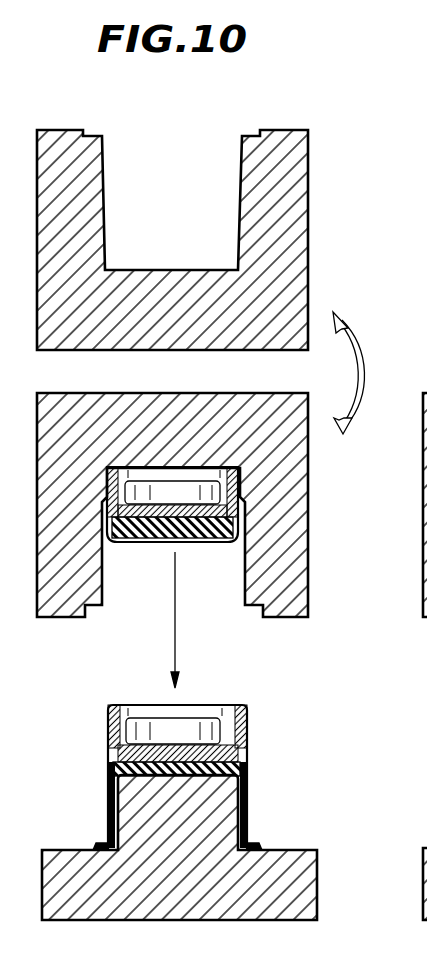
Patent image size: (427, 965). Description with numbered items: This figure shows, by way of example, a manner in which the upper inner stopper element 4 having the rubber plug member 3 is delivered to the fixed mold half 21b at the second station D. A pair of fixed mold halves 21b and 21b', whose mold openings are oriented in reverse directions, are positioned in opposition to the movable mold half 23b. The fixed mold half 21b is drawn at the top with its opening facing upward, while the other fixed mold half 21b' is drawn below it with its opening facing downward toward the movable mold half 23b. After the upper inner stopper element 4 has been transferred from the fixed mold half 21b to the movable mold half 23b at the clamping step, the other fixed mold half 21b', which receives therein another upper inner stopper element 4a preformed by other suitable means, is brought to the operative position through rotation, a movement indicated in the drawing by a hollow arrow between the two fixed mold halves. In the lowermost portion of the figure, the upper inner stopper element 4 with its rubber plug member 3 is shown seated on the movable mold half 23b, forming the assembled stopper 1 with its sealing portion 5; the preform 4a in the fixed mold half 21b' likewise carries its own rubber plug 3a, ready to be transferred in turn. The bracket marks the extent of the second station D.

The fixed mold half 21b is at (200, 240).
The other fixed mold half 21b' is at (203, 505).
The another upper inner stopper element 4a is at (141, 546).
The sealing ring preform 3a is at (201, 546).
The closure assembly 1 is at (108, 731).
The upper inner stopper element 4 is at (247, 718).
The sealing ring 5 is at (242, 766).
The rubber plug member 3 is at (112, 772).
The movable mold half 23b is at (247, 797).
The second station D is at (367, 510).